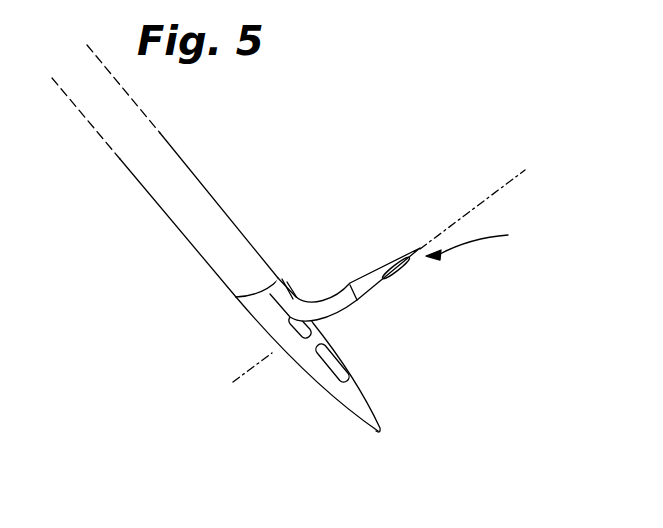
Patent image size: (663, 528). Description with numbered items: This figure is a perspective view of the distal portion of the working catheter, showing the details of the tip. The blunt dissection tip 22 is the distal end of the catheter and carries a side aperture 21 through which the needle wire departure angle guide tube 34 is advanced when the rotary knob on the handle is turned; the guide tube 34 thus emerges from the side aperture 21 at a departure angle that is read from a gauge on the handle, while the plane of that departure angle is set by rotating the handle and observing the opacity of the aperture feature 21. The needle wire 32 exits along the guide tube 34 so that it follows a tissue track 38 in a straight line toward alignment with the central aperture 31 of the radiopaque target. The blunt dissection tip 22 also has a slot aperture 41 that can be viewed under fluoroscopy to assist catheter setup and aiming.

The side aperture 21 is at (284, 279).
The blunt dissection tip 22 is at (355, 422).
The central aperture 31 is at (481, 243).
The needle wire 32 is at (389, 280).
The needle wire departure angle guide tube 34 is at (324, 290).
The tissue track 38 is at (497, 190).
The slot aperture 41 is at (337, 378).